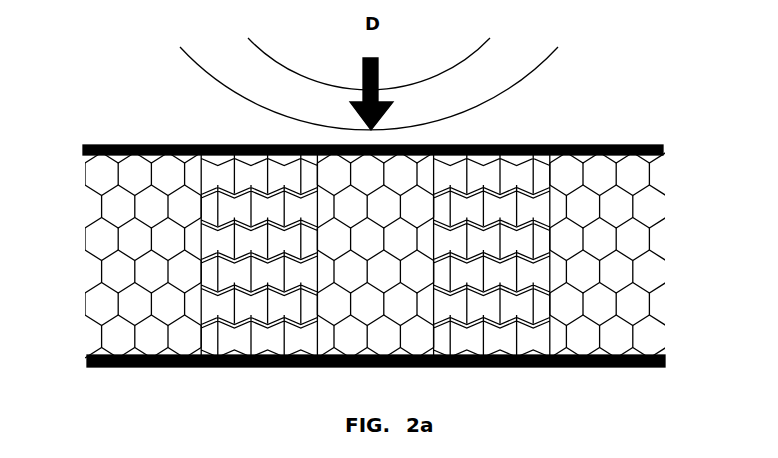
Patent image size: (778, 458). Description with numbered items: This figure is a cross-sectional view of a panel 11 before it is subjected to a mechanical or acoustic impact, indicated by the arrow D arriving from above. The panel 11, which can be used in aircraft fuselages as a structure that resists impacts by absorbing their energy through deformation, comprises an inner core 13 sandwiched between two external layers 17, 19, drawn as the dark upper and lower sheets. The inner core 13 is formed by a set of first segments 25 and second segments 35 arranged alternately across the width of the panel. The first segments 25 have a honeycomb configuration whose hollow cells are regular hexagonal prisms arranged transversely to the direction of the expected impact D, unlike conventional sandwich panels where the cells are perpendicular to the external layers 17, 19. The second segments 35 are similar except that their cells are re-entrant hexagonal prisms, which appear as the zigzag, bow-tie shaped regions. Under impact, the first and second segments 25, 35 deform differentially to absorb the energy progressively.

The panel 11 is at (61, 126).
The inner core 13 is at (402, 277).
The external layer 17 is at (665, 151).
The external layer 19 is at (667, 361).
The first segments 25 is at (153, 342).
The second segments 35 is at (267, 342).